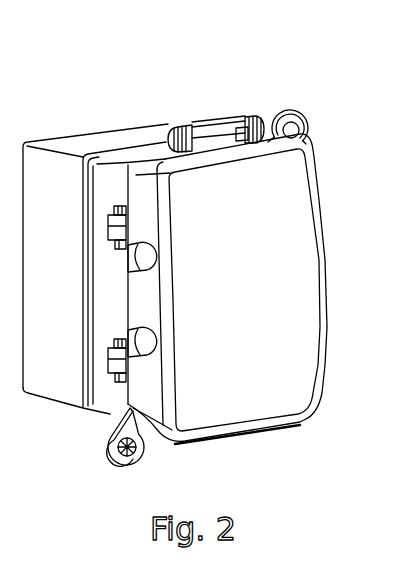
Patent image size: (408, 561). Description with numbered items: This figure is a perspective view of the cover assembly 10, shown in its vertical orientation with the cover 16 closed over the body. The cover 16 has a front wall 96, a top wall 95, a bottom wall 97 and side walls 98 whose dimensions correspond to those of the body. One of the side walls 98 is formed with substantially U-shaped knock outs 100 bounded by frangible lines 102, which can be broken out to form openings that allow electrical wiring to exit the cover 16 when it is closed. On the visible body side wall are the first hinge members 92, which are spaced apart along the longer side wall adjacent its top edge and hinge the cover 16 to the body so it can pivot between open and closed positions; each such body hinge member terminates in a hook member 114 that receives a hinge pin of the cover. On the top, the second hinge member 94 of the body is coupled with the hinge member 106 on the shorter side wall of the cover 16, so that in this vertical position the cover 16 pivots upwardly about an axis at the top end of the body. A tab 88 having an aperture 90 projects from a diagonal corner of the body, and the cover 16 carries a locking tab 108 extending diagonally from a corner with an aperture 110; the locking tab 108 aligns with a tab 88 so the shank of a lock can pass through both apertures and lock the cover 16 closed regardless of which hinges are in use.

The cover assembly 10 is at (233, 73).
The cover 16 is at (329, 211).
The tab 88 is at (302, 111).
The aperture 90 is at (298, 131).
The first hinge members 92 is at (97, 231).
The second hinge member 94 is at (249, 118).
The top wall 95 is at (151, 158).
The front wall 96 is at (304, 279).
The bottom wall 97 is at (238, 442).
The side walls 98 is at (143, 205).
The U-shaped knock outs 100 is at (144, 246).
The frangible lines 102 is at (153, 260).
The hinge member 106 is at (208, 118).
The locking tab 108 is at (142, 449).
The aperture 110 is at (143, 450).
The hook member 114 is at (110, 362).